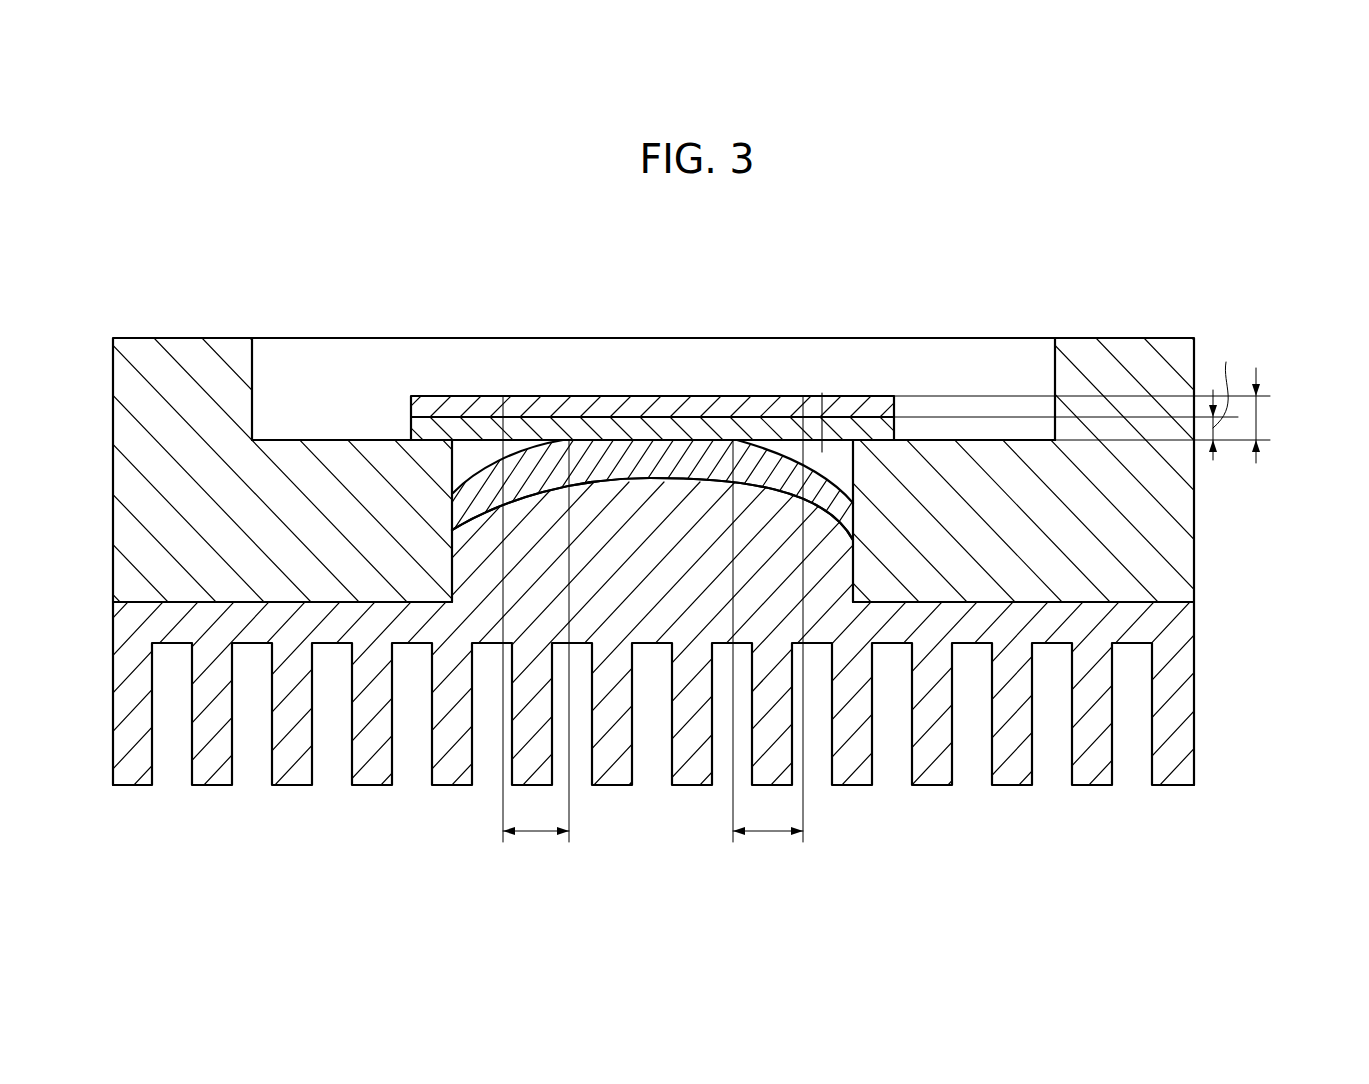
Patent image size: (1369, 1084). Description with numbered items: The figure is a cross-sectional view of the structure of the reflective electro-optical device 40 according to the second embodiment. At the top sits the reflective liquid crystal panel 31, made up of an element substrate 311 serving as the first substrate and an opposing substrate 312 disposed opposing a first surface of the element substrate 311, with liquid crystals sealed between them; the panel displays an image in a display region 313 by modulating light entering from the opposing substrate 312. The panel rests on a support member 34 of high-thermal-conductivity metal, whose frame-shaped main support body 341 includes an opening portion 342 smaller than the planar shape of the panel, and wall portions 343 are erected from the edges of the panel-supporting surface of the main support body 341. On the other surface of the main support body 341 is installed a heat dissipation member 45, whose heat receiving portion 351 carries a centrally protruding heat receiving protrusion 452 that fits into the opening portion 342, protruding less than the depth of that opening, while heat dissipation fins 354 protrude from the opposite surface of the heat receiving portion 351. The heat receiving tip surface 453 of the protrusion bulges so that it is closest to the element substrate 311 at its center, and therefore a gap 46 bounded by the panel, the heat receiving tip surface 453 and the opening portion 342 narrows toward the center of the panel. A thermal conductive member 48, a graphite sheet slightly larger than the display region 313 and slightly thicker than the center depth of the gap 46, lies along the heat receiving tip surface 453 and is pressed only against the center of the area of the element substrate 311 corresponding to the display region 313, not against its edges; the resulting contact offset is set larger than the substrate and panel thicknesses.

The reflective electro-optical device 40 is at (1248, 251).
The support member 34 is at (1286, 522).
The main support body 341 is at (140, 487).
The opening portion 342 is at (448, 477).
The wall portions 343 is at (140, 398).
The heat dissipation member 45 is at (1254, 675).
The heat receiving portion 351 is at (140, 620).
The heat dissipation fins 354 is at (1008, 773).
The heat receiving protrusion 452 is at (493, 594).
The heat receiving tip surface 453 is at (486, 503).
The gap 46 is at (465, 452).
The thermal conductive member 48 is at (853, 440).
The reflective liquid crystal panel 31 is at (908, 294).
The element substrate 311 is at (890, 428).
The opposing substrate 312 is at (890, 405).
The display region 313 is at (802, 392).